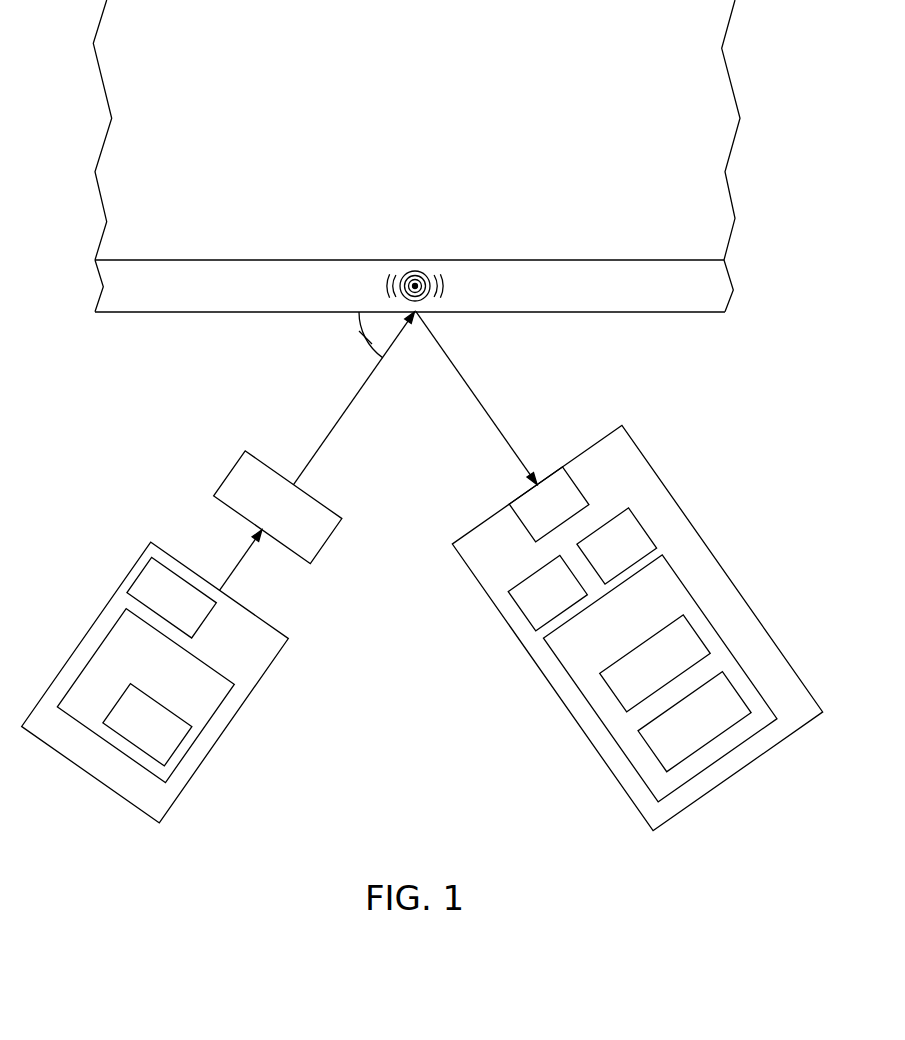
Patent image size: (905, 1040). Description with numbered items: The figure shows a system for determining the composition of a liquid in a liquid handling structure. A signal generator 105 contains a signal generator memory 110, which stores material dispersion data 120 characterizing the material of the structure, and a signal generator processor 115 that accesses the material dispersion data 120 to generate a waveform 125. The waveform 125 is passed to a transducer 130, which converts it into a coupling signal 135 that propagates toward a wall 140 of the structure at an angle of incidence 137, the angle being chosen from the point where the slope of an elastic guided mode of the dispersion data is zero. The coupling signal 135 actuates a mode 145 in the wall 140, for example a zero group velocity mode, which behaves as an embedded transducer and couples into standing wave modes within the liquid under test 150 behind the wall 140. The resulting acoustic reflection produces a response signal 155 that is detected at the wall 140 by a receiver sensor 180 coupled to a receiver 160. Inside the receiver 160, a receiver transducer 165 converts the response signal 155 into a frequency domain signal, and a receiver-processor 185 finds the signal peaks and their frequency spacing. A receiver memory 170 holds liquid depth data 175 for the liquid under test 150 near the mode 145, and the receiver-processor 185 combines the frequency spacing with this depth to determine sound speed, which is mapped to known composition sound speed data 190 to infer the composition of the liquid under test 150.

The signal generator 105 is at (266, 657).
The signal generator memory 110 is at (158, 667).
The signal generator processor 115 is at (194, 611).
The material dispersion data 120 is at (168, 739).
The waveform 125 is at (245, 553).
The transducer 130 is at (295, 522).
The coupling signal 135 is at (330, 438).
The angle of incidence 137 is at (355, 327).
The wall 140 is at (171, 296).
The mode 145 is at (400, 263).
The liquid under test 150 is at (448, 44).
The response signal 155 is at (471, 391).
The receiver 160 is at (633, 481).
The receiver transducer 165 is at (571, 602).
The receiver memory 170 is at (640, 634).
The liquid depth data 175 is at (680, 669).
The receiver sensor 180 is at (573, 514).
The receiver-processor 185 is at (638, 561).
The composition sound speed data 190 is at (718, 731).